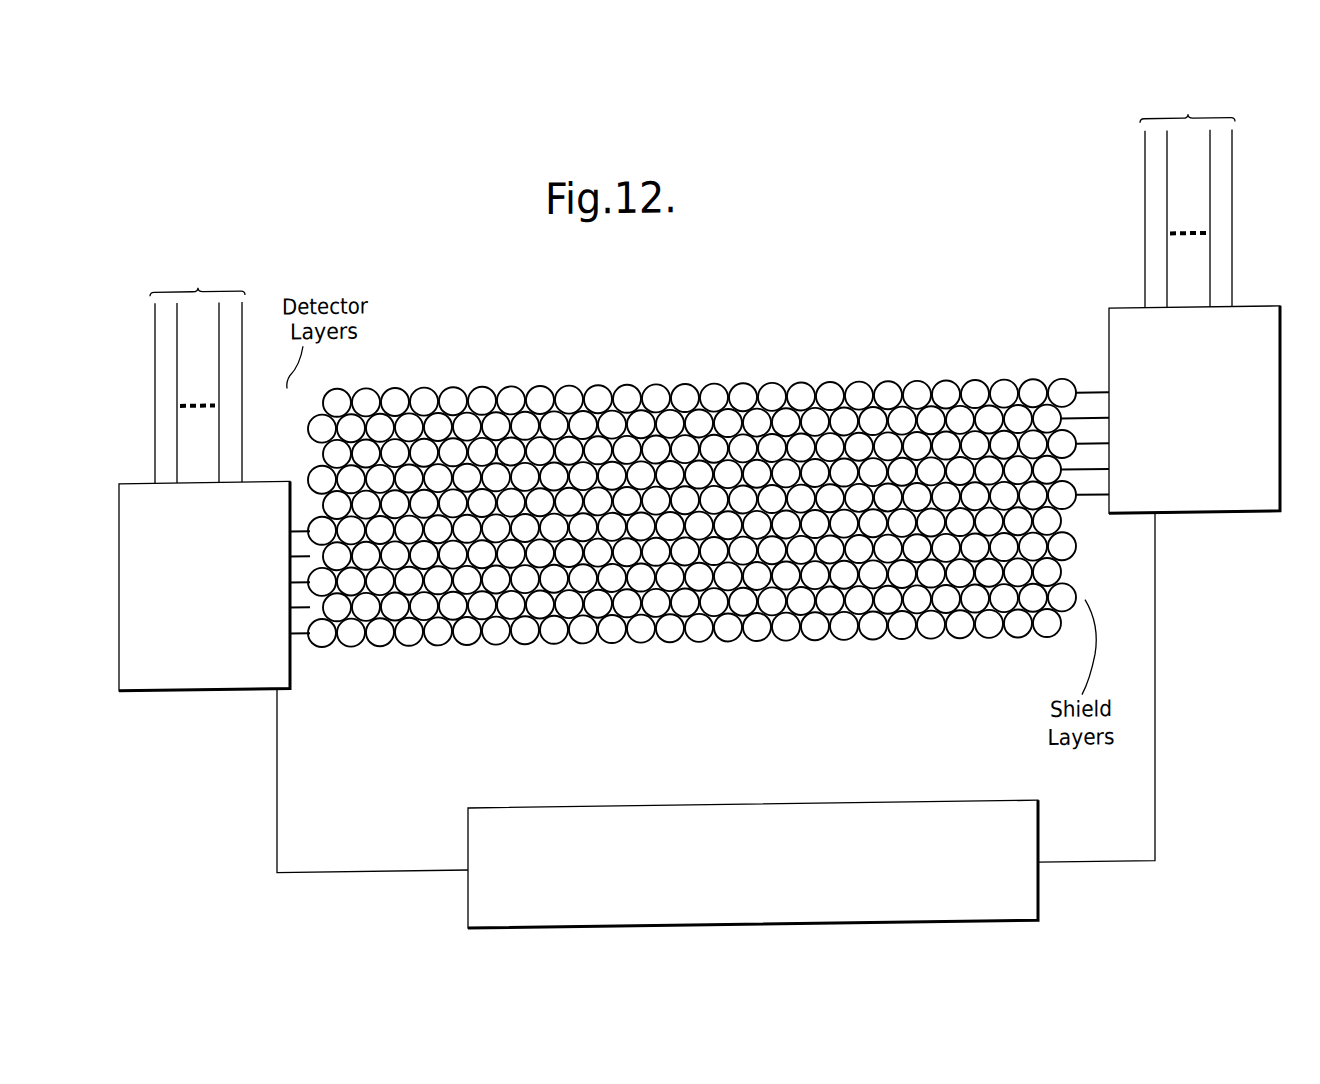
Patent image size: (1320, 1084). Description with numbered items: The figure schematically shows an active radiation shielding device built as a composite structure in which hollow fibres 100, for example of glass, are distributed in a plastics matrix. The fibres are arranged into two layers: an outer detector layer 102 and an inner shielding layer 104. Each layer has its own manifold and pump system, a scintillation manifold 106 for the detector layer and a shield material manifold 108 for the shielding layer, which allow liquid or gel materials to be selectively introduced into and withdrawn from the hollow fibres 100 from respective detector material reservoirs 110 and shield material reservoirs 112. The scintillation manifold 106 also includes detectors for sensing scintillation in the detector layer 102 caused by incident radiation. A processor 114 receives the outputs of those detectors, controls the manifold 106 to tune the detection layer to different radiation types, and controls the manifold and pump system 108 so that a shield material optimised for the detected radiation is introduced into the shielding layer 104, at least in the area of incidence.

The hollow fibres 100 is at (693, 537).
The outer detector layer 102 is at (303, 386).
The inner shielding layer 104 is at (1080, 523).
The scintillation manifold and pump system 106 is at (1237, 509).
The shield material manifold and pump system 108 is at (185, 668).
The detector material reservoirs 110 is at (1127, 106).
The shield material reservoirs 112 is at (217, 228).
The processor 114 is at (578, 818).